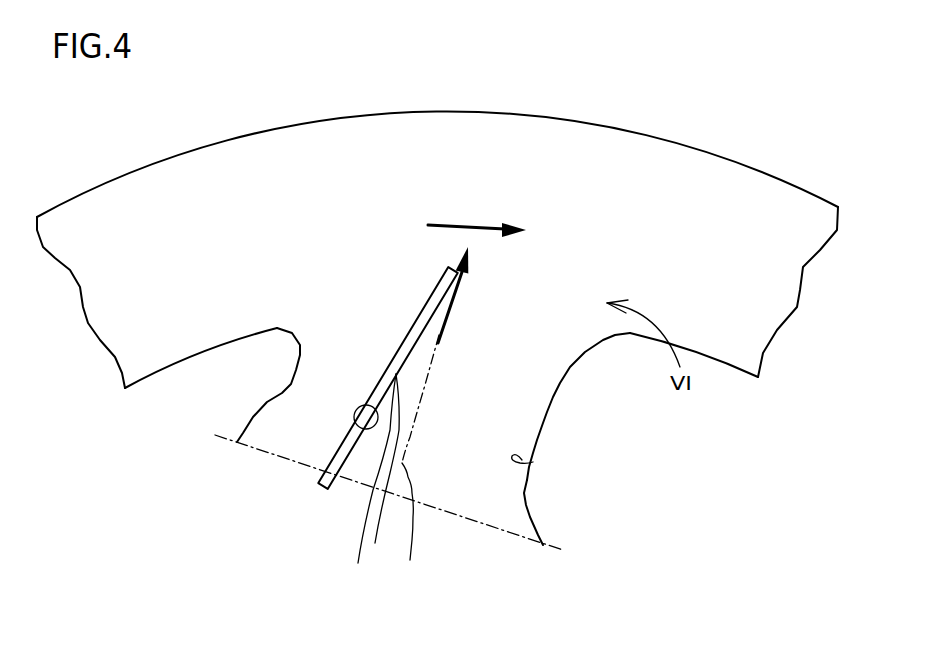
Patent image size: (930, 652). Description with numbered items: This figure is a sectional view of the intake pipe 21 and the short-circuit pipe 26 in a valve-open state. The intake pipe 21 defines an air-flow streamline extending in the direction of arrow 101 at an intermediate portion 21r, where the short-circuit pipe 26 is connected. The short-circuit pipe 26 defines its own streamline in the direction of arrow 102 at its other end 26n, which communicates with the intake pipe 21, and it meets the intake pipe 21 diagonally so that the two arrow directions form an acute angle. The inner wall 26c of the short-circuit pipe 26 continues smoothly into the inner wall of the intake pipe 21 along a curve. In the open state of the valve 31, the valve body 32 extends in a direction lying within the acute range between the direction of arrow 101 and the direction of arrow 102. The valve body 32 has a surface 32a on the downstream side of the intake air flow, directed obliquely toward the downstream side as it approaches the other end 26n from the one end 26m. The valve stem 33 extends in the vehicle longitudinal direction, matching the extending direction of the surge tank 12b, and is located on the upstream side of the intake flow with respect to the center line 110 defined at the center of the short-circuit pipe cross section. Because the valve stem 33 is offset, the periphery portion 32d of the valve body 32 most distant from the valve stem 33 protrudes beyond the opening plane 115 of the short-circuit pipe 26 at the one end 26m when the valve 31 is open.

The intake pipe 21 is at (293, 125).
The intermediate portion 21r is at (517, 182).
The short-circuit pipe 26 is at (288, 386).
The other end 26n is at (605, 342).
The inner wall 26c is at (522, 460).
The one end 26m is at (543, 547).
The arrow 101 is at (467, 223).
The arrow 102 is at (450, 310).
The valve 31 is at (378, 589).
The valve body 32 is at (387, 430).
The surface 32a is at (422, 340).
The periphery portion 32d is at (320, 488).
The valve stem 33 is at (367, 430).
The surge tank 12b is at (282, 488).
The center line 110 is at (417, 464).
The opening plane 115 is at (452, 513).